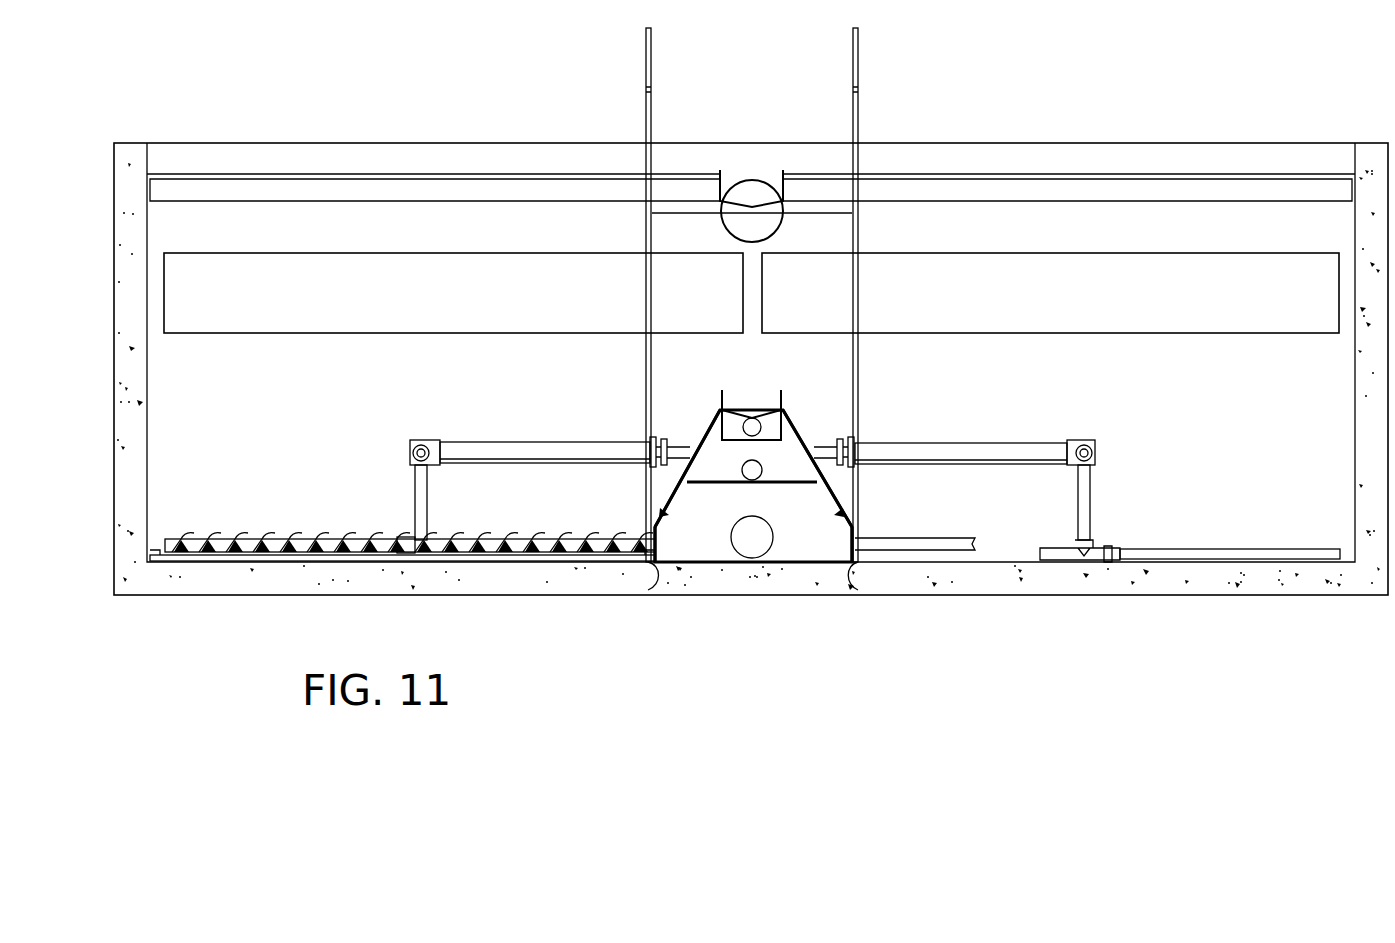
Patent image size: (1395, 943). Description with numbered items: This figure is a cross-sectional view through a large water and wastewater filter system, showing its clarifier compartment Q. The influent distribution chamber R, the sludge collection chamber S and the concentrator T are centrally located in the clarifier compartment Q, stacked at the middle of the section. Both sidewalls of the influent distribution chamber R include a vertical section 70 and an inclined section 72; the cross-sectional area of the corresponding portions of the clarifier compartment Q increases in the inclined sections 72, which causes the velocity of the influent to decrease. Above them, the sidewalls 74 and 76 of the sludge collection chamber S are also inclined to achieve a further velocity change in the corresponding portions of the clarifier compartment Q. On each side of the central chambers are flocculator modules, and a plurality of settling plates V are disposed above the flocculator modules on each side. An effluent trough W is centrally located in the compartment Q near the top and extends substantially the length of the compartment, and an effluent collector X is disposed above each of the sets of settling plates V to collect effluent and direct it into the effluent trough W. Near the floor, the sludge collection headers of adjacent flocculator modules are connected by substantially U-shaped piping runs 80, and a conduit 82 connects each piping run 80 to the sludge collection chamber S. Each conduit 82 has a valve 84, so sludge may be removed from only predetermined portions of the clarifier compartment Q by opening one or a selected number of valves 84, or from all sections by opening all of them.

The clarifier compartment Q is at (168, 388).
The effluent collector X is at (331, 188).
The effluent trough W is at (748, 163).
The settling plates V is at (295, 313).
The concentrator T is at (760, 403).
The sludge collection chamber S is at (755, 506).
The influent distribution chamber R is at (795, 545).
The vertical section 70 is at (656, 565).
The inclined section 72 is at (660, 512).
The sidewall 74 is at (705, 437).
The sidewall 76 is at (802, 432).
The piping run 80 is at (415, 490).
The conduit 82 is at (528, 443).
The valve 84 is at (650, 440).